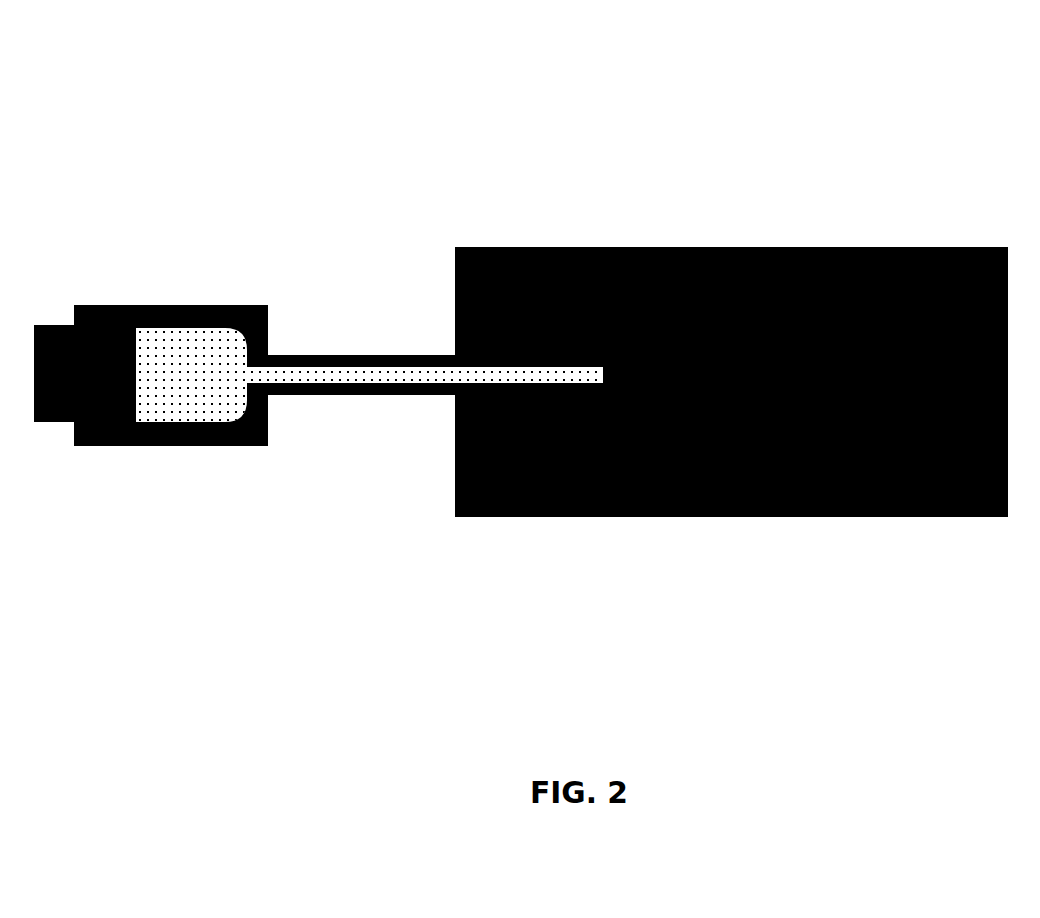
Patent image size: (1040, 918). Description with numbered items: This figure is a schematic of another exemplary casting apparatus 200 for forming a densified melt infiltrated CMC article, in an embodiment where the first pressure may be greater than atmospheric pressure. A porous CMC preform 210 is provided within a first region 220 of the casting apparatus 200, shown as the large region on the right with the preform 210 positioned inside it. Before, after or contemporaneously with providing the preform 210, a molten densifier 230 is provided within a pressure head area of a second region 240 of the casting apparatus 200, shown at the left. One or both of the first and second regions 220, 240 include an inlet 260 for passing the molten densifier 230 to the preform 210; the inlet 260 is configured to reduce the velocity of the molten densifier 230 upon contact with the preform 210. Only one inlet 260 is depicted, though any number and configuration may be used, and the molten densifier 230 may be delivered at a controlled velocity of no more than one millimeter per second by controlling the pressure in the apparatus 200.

The casting apparatus 200 is at (224, 118).
The porous CMC preform 210 is at (857, 397).
The first region 220 is at (1007, 531).
The molten densifier 230 is at (208, 390).
The second region 240 is at (269, 462).
The inlet 260 is at (612, 370).